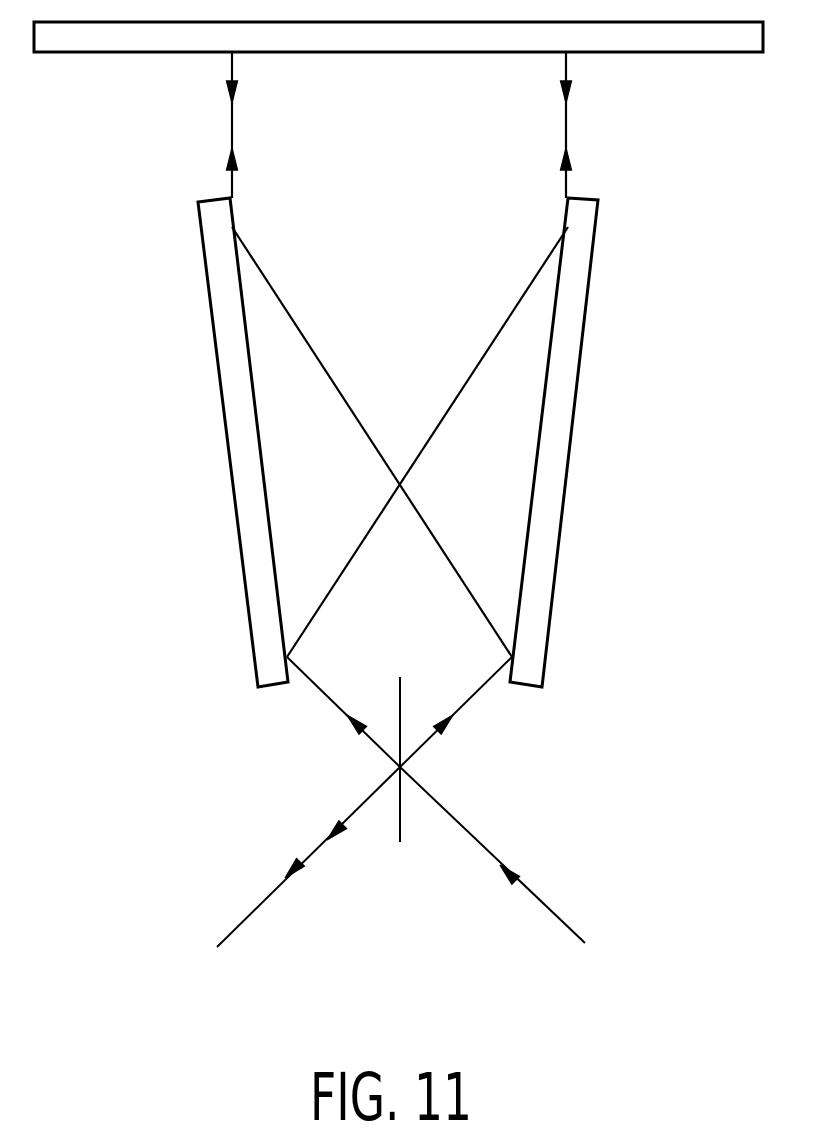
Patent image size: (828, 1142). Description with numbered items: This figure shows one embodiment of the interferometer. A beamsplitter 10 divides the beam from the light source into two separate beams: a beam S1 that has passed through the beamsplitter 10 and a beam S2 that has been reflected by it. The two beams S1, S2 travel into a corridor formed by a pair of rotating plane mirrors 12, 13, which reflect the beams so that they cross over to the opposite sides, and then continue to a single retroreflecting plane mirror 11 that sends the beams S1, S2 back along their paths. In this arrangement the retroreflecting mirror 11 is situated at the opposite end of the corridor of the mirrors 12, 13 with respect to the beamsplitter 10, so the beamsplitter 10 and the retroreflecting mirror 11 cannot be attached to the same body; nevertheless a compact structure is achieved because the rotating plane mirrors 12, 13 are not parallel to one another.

The beamsplitter 10 is at (398, 812).
The plane mirror 11 is at (407, 52).
The plane mirror 12 is at (265, 470).
The plane mirror 13 is at (535, 452).
The light beam S1 is at (318, 680).
The light beam S2 is at (427, 742).